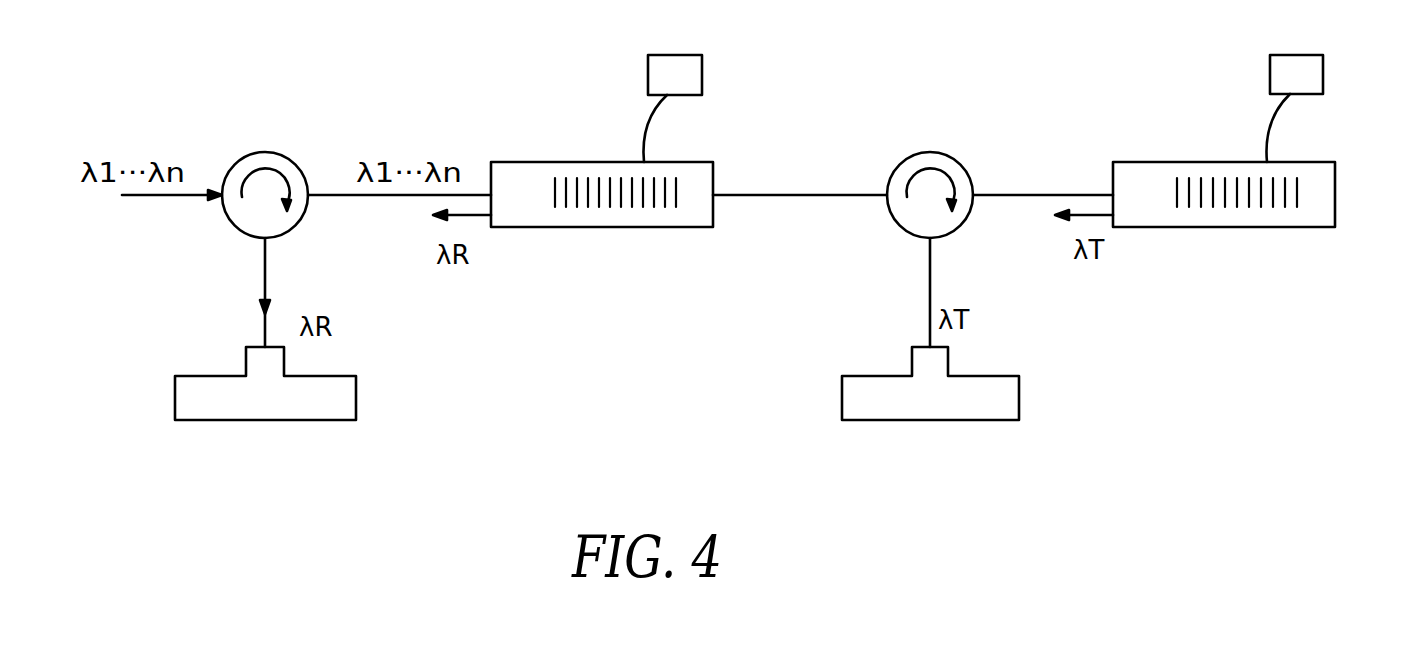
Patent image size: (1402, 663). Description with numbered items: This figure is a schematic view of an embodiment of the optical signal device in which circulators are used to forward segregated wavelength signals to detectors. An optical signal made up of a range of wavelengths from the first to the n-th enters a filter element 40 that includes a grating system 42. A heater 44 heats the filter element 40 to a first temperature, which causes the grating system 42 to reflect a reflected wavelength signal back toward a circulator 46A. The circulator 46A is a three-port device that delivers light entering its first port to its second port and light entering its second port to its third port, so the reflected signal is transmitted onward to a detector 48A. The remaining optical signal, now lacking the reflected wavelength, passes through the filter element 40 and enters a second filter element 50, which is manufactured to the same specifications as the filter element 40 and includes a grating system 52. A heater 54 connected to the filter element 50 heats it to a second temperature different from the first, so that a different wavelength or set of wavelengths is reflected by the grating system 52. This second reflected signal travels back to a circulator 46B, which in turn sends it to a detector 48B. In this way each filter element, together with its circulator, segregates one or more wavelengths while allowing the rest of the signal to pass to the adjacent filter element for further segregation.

The filter element 40 is at (602, 227).
The grating system 42 is at (675, 190).
The heater 44 is at (670, 68).
The circulator 46A is at (267, 158).
The circulator 46B is at (955, 153).
The detector 48A is at (212, 402).
The detector 48B is at (880, 408).
The filter element 50 is at (1288, 203).
The grating system 52 is at (1197, 227).
The heater 54 is at (1313, 72).